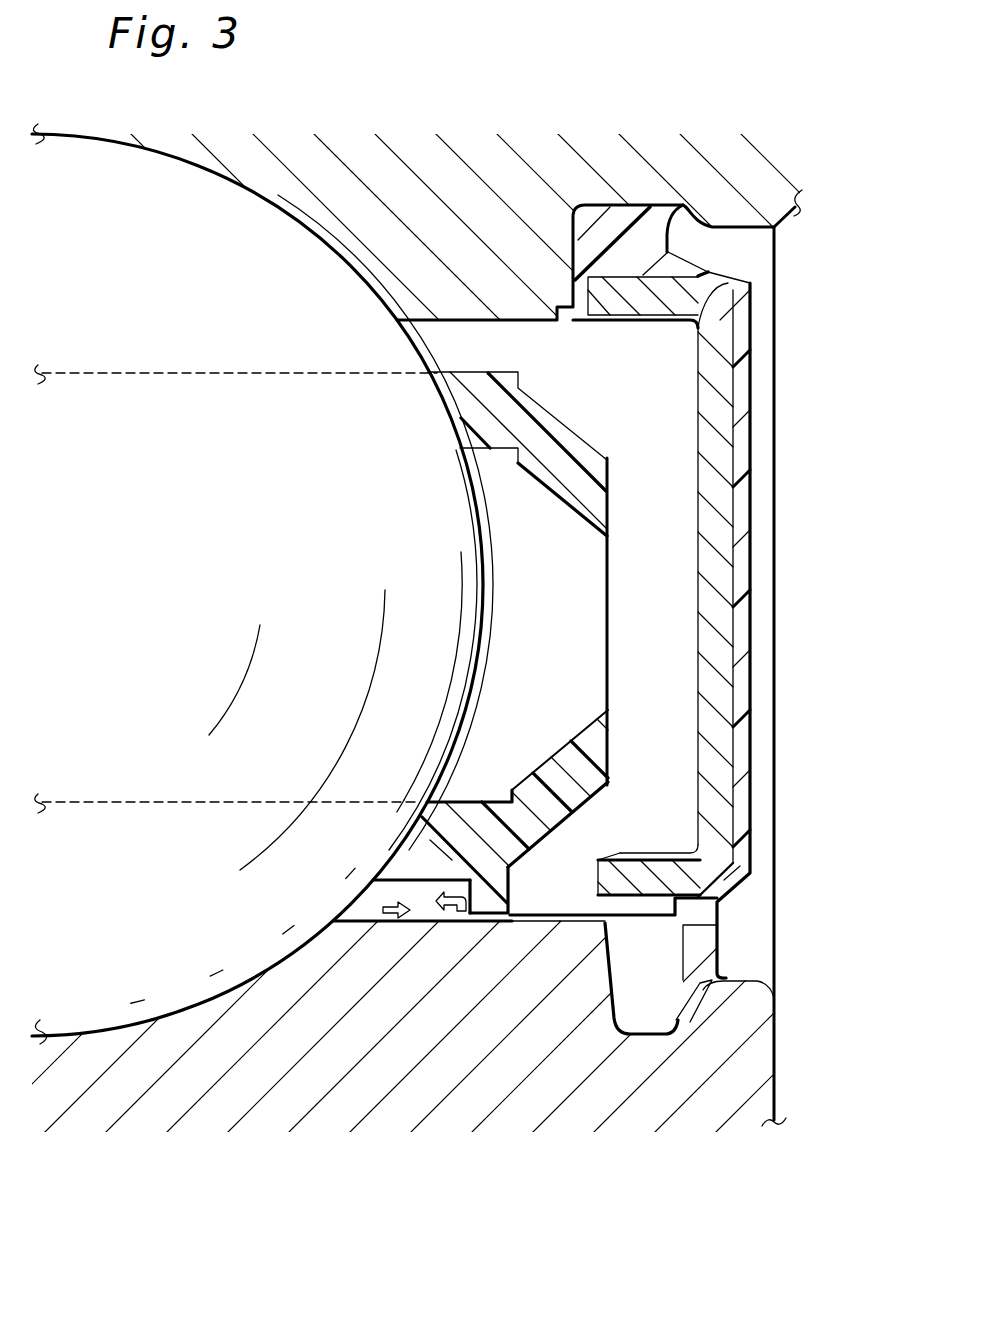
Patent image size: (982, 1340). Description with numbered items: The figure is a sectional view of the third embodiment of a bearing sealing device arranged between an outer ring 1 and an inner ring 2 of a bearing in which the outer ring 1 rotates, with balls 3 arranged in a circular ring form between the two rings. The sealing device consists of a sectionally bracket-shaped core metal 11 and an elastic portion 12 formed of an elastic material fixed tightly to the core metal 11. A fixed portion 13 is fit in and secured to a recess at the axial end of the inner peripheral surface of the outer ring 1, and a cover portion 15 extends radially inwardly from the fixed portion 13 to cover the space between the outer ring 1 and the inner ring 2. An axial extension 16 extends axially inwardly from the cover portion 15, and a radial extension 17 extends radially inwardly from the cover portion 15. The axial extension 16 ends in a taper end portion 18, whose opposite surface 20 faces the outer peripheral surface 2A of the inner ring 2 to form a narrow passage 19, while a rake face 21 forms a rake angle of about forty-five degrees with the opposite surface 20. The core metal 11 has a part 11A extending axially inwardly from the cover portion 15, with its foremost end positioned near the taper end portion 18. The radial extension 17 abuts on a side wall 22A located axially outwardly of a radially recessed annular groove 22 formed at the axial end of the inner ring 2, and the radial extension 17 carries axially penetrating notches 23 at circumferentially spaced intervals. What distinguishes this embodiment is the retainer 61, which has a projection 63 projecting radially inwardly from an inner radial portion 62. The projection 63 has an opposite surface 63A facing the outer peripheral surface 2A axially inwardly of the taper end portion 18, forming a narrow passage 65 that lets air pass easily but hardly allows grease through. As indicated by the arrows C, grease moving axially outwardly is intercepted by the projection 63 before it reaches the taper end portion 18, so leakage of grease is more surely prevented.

The outer ring 1 is at (464, 199).
The inner ring 2 is at (434, 1043).
The outer peripheral surface 2A is at (353, 925).
The balls 3 is at (221, 290).
The core metal 11 is at (710, 347).
The part 11A is at (660, 873).
The elastic portion 12 is at (737, 393).
The fixed portion 13 is at (660, 215).
The cover portion 15 is at (686, 445).
The axial extension 16 is at (640, 850).
The radial extension 17 is at (702, 928).
The taper end portion 18 is at (582, 877).
The narrow passage 19 is at (555, 925).
The opposite surface 20 is at (585, 921).
The rake face 21 is at (563, 890).
The annular groove 22 is at (647, 1033).
The side wall 22A is at (726, 973).
The notches 23 is at (682, 1027).
The retainer 61 is at (563, 423).
The inner radial portion 62 is at (363, 910).
The projection 63 is at (530, 920).
The opposite surface 63A is at (497, 913).
The narrow passage 65 is at (466, 925).
The arrows C is at (467, 880).